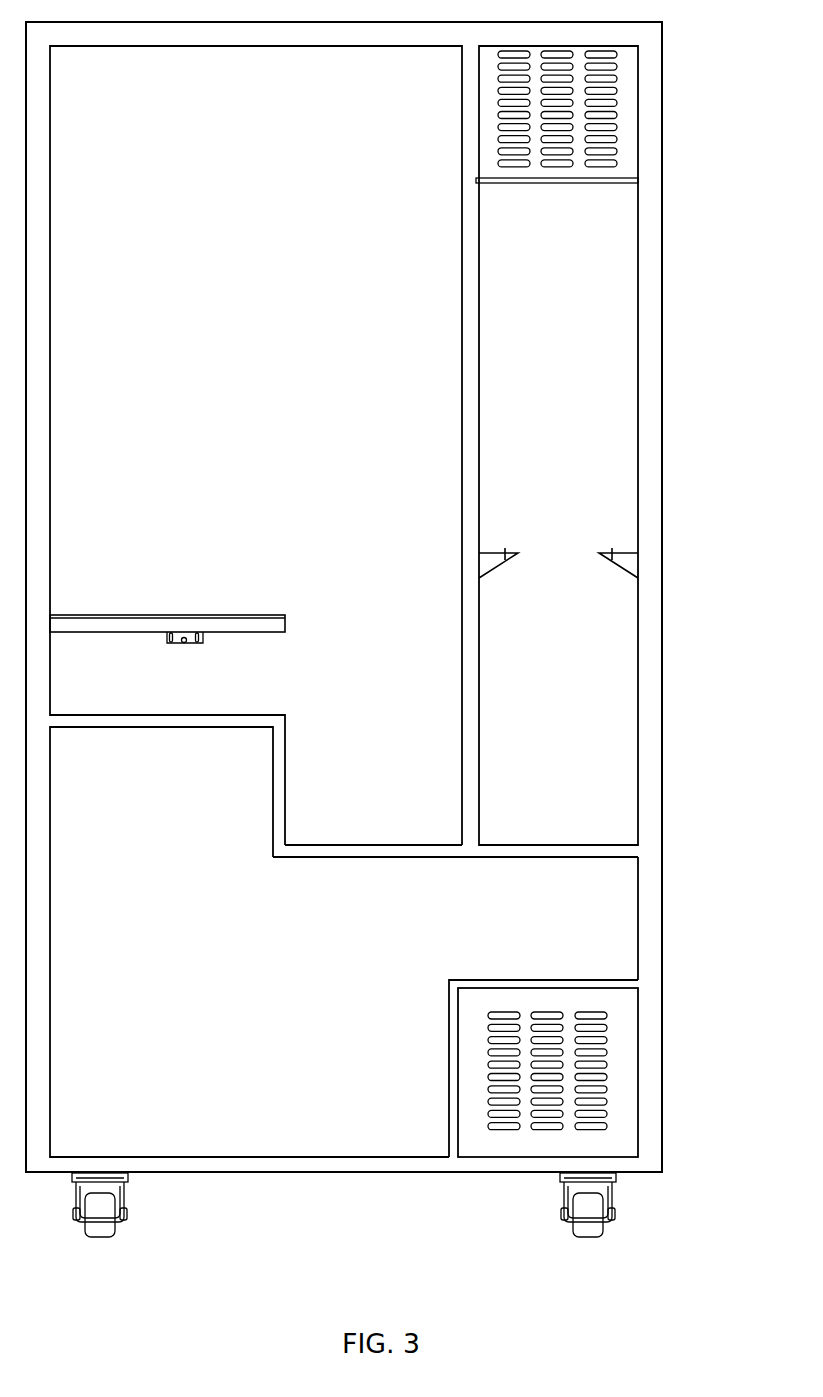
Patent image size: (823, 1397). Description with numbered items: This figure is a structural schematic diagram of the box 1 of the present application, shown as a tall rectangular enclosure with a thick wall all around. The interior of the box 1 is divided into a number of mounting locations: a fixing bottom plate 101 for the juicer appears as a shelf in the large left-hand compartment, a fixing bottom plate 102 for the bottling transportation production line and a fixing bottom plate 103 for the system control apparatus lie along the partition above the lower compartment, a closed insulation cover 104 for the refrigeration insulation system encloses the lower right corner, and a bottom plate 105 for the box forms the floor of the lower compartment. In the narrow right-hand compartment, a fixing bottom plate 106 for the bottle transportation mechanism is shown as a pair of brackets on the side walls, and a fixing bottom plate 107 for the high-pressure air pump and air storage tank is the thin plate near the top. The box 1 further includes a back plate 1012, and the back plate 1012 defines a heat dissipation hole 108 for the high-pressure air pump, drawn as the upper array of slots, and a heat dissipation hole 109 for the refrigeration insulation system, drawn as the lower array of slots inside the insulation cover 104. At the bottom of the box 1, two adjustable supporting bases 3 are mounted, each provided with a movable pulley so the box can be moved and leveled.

The box 1 is at (662, 607).
The back plate 1012 is at (315, 440).
The fixing bottom plate for juicer 101 is at (227, 625).
The fixing bottom plate for bottling transportation production line 102 is at (333, 846).
The fixing bottom plate for system control apparatus 103 is at (555, 843).
The closed insulation cover for refrigeration insulation system 104 is at (455, 1003).
The bottom plate for box 105 is at (293, 1156).
The fixing bottom plate for bottle transportation mechanism 106 is at (626, 553).
The fixing bottom plate for high-pressure air pump and air storage tank 107 is at (533, 181).
The heat dissipation hole for high-pressure air pump 108 is at (506, 116).
The heat dissipation hole for refrigeration insulation system 109 is at (505, 1030).
The adjustable supporting base 3 is at (102, 1213).